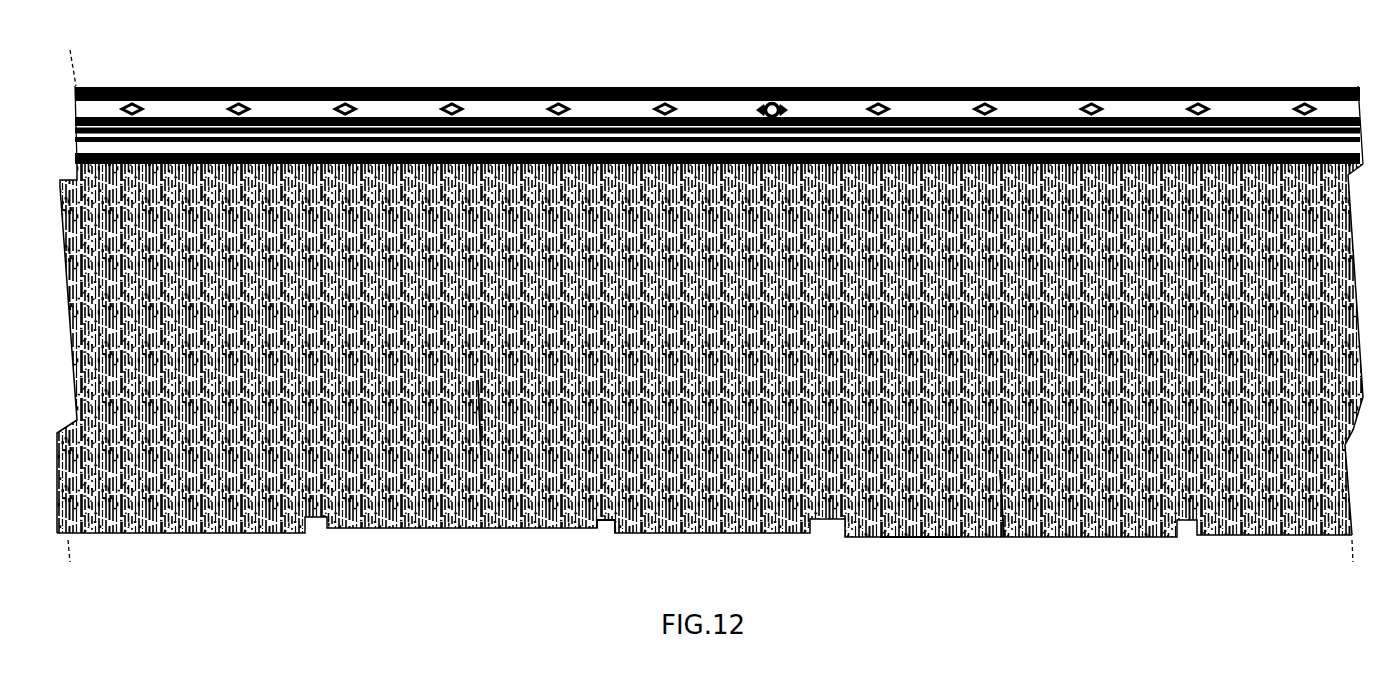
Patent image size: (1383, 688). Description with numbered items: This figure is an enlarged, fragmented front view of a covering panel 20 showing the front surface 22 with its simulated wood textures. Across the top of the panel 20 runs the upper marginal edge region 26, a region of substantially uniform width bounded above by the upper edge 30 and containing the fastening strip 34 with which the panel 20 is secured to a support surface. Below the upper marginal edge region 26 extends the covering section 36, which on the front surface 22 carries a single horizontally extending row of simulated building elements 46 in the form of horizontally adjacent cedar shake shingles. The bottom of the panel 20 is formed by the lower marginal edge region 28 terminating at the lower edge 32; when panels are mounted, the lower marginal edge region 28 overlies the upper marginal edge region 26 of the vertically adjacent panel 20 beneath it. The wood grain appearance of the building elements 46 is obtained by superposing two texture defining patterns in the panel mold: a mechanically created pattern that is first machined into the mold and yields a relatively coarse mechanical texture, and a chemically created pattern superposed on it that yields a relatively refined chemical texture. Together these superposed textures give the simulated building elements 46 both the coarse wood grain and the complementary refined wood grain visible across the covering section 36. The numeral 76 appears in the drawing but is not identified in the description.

The panel 20 is at (710, 312).
The front surface 22 is at (659, 327).
The upper marginal edge region 26 is at (802, 110).
The lower marginal edge region 28 is at (918, 533).
The upper edge 30 is at (719, 95).
The lower edge 32 is at (642, 533).
The fastening strip 34 is at (432, 108).
The covering section 36 is at (1004, 537).
The simulated building elements 46 is at (203, 533).
The groove line 76 is at (482, 458).